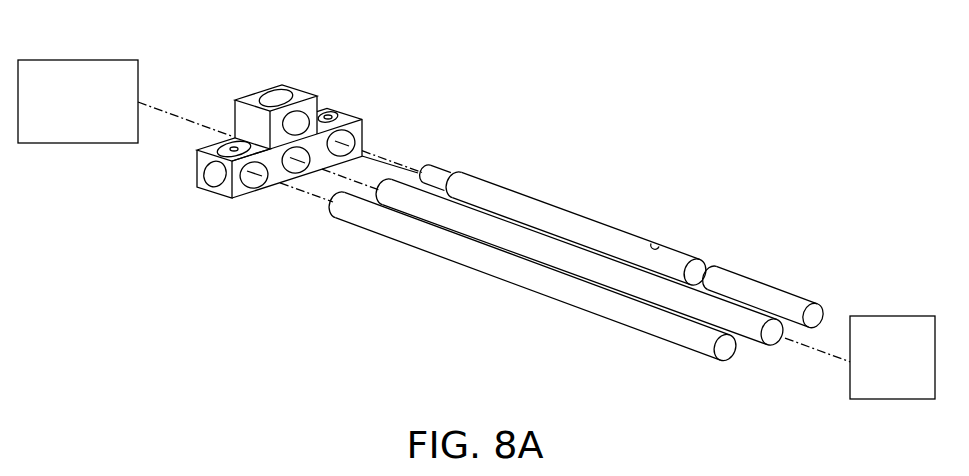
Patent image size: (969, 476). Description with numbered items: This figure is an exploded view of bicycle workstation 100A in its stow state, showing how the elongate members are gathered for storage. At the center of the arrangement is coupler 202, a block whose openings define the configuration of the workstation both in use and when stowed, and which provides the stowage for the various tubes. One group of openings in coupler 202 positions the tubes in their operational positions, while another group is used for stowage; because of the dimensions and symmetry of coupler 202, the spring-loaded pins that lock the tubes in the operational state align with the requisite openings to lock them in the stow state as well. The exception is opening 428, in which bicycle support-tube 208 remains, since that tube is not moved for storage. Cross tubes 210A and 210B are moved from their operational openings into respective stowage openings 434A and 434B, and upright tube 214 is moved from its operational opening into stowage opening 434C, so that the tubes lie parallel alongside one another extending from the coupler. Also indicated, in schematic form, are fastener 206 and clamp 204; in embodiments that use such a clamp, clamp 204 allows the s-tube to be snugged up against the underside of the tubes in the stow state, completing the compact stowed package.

The bicycle workstation 100A is at (706, 163).
The coupler 202 is at (238, 68).
The clamp 204 is at (869, 384).
The fastener 206 is at (55, 127).
The bicycle support-tube 208 is at (750, 328).
The cross tube 210A is at (533, 287).
The cross tube 210B is at (740, 276).
The upright tube 214 is at (608, 227).
The opening 428 is at (296, 181).
The stowage opening 434A is at (233, 189).
The stowage opening 434B is at (343, 134).
The stowage opening 434C is at (302, 118).